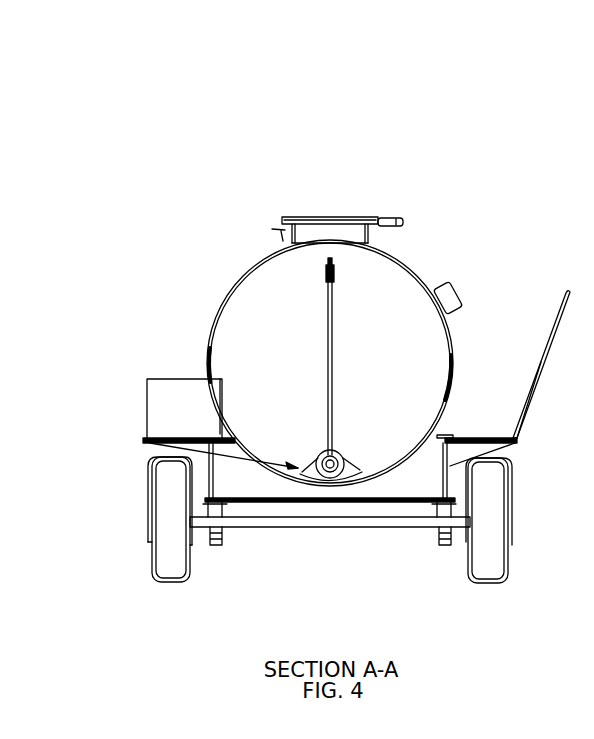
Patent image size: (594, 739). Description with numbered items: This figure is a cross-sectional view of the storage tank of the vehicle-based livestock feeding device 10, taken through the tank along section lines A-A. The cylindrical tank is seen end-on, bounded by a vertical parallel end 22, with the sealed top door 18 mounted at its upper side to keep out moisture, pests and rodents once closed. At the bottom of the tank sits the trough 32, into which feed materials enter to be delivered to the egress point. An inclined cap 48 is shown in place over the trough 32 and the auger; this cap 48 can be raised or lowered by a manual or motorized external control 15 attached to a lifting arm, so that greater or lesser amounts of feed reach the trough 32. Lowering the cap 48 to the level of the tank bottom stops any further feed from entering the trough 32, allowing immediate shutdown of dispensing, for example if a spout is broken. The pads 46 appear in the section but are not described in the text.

The vehicle-based livestock feeding device 10 is at (196, 184).
The external control 15 is at (336, 324).
The top door 18 is at (384, 212).
The parallel end 22 is at (252, 296).
The trough 32 is at (322, 469).
The support pads 46 is at (208, 367).
The inclined cap 48 is at (168, 437).